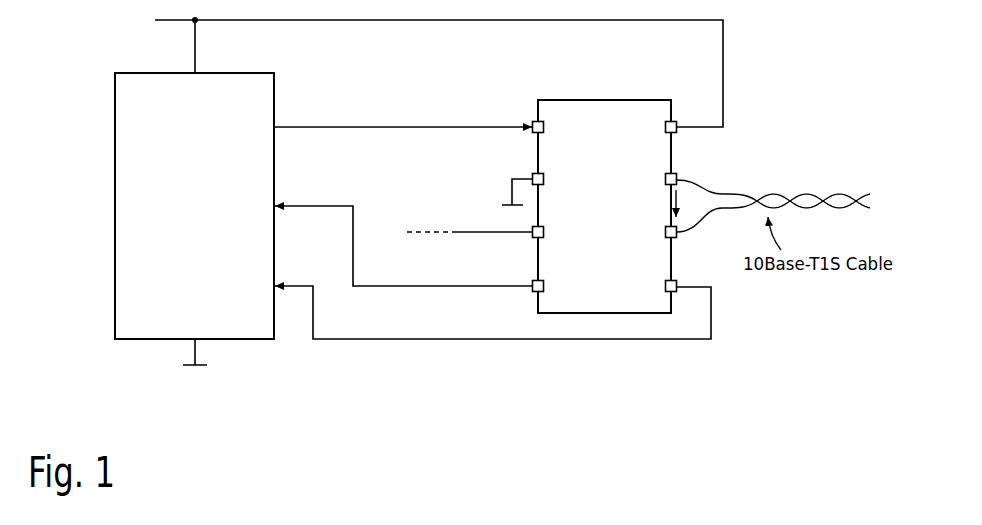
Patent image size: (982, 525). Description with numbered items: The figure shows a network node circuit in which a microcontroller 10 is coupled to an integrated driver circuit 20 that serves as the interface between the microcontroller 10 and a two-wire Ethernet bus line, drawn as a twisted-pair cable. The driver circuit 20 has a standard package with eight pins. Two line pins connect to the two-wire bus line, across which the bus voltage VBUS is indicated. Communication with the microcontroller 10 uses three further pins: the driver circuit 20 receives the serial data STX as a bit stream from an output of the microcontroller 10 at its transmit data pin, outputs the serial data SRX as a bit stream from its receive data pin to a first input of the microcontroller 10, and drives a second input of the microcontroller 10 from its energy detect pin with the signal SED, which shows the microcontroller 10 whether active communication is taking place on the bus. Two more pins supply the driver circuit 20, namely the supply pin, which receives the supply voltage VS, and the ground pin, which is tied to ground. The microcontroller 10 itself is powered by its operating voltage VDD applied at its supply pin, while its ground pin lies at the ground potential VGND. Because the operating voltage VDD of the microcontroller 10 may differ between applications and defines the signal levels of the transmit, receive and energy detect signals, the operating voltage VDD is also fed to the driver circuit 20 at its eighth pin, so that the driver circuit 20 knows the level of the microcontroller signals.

The microcontroller 10 is at (270, 213).
The integrated driver circuit 20 is at (600, 110).
The operating voltage of the microcontroller VDD is at (155, 20).
The ground potential VGND is at (215, 365).
The serial data STX is at (403, 115).
The serial data SRX is at (404, 246).
The energy detect signal line SED is at (493, 312).
The supply voltage VS is at (467, 220).
The bus voltage VBUS is at (695, 203).